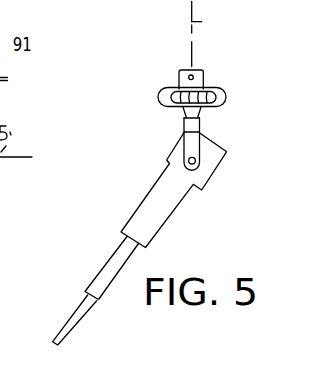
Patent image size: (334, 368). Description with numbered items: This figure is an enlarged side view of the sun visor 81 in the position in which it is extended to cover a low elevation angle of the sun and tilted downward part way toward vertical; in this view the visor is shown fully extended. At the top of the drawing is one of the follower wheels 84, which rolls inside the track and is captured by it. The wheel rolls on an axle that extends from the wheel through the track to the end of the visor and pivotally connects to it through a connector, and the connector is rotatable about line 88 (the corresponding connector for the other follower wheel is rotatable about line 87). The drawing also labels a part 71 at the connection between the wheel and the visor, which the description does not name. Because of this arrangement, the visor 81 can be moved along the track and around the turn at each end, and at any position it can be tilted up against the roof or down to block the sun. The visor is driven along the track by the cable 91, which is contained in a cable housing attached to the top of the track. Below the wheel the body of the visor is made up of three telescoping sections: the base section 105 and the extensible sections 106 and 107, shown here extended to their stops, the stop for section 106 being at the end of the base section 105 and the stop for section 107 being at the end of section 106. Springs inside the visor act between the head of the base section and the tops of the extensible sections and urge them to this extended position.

The line 88 is at (227, 34).
The line 87 is at (207, 46).
The cable 91 is at (188, 75).
The follower wheel 84 is at (206, 91).
The shaft 71 is at (230, 118).
The base section 105 is at (140, 198).
The visor 81 is at (176, 231).
The telescoping section 106 is at (100, 267).
The telescoping section 107 is at (56, 330).